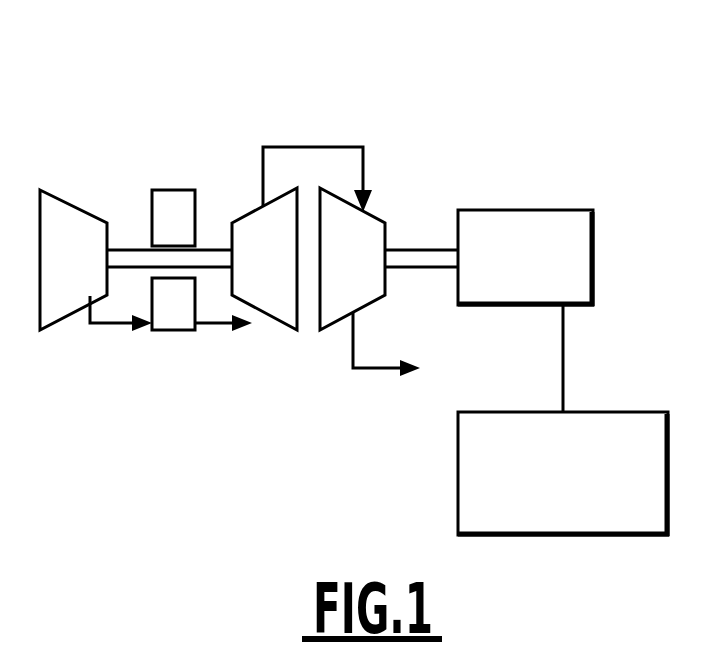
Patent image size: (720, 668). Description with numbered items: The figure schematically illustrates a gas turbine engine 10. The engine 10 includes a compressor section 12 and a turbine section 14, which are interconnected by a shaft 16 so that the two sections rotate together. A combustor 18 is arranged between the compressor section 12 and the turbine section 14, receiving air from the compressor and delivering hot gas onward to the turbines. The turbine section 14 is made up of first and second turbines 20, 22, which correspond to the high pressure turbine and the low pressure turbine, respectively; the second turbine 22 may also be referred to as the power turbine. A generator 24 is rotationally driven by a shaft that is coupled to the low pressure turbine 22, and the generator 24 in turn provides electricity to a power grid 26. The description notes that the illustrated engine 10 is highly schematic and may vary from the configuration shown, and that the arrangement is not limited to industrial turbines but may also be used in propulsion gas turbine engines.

The gas turbine engine 10 is at (375, 122).
The compressor section 12 is at (78, 192).
The turbine section 14 is at (232, 100).
The shaft 16 is at (125, 249).
The combustor 18 is at (176, 332).
The first turbine 20 is at (240, 200).
The second turbine 22 is at (367, 228).
The generator 24 is at (563, 210).
The power grid 26 is at (640, 412).